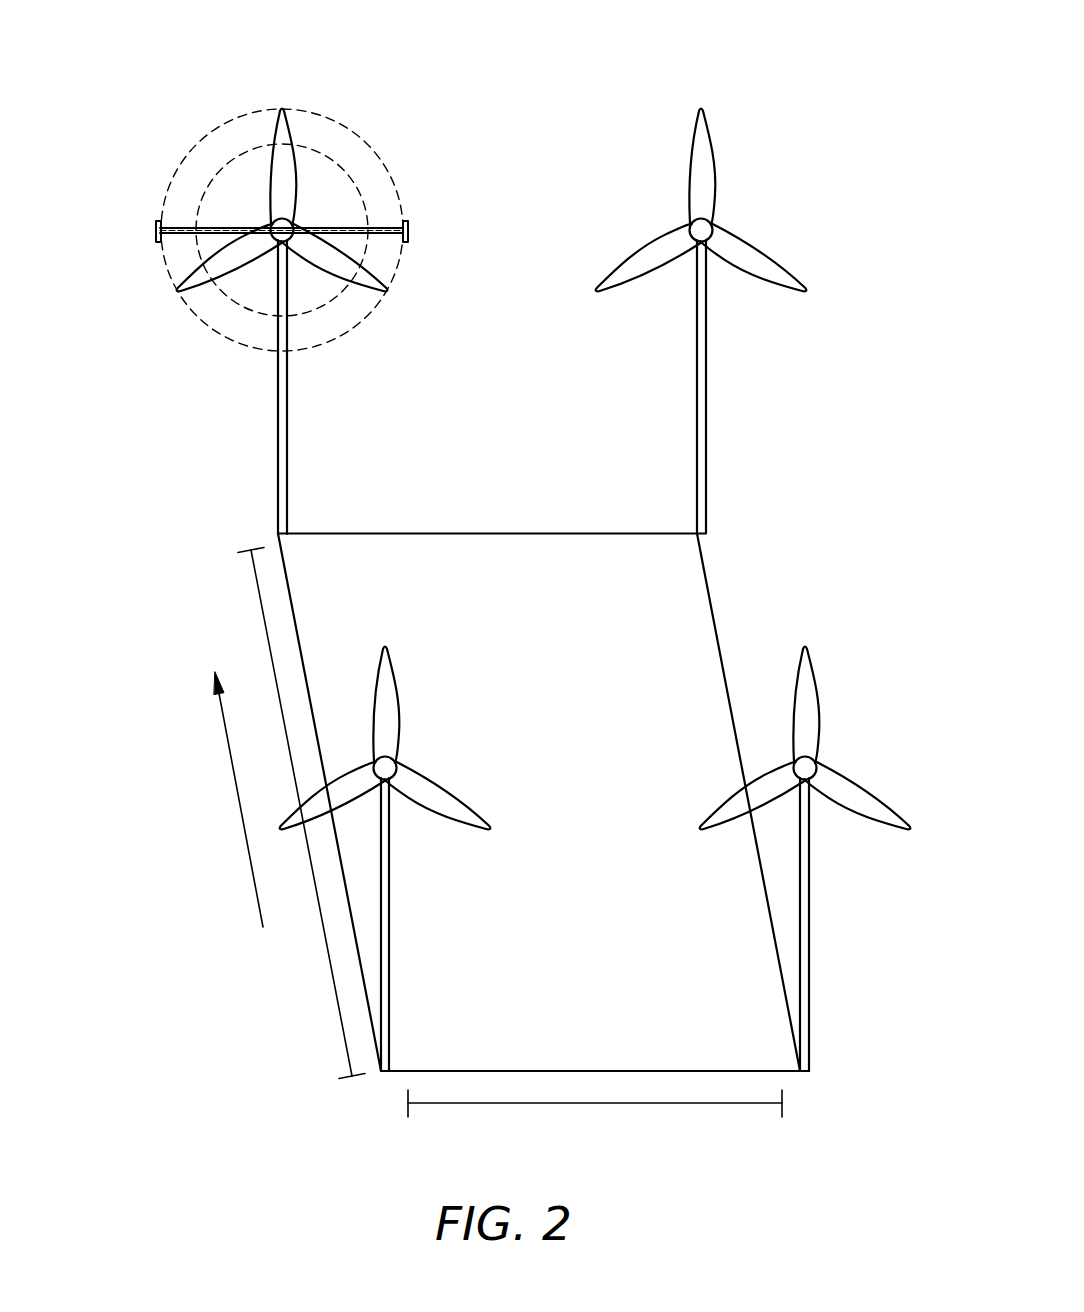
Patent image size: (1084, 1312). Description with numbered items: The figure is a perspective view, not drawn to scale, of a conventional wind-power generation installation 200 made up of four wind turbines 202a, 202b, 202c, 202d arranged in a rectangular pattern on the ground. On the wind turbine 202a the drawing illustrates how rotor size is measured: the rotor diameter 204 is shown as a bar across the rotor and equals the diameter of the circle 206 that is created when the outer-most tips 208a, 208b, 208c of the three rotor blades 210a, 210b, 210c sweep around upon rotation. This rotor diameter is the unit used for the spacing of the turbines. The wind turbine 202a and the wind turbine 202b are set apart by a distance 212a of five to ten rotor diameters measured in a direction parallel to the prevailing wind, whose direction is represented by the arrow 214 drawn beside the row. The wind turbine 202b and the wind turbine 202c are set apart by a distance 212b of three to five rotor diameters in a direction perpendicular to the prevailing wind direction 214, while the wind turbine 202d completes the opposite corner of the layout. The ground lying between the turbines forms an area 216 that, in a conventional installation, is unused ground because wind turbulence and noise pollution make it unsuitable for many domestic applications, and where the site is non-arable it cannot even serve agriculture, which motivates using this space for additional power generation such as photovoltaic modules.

The wind-power generation installation 200 is at (803, 88).
The wind turbine 202a is at (286, 294).
The wind turbine 202b is at (389, 990).
The wind turbine 202c is at (810, 928).
The wind turbine 202d is at (706, 390).
The rotor diameter 204 is at (380, 227).
The circle 206 is at (357, 135).
The outer-most tip 208a is at (388, 290).
The outer-most tip 208b is at (282, 107).
The outer-most tip 208c is at (178, 290).
The rotor blade 210a is at (342, 267).
The rotor blade 210b is at (281, 160).
The rotor blade 210c is at (221, 267).
The distance 212a is at (263, 628).
The distance 212b is at (585, 1104).
The arrow 214 is at (237, 797).
The area 216 is at (703, 622).